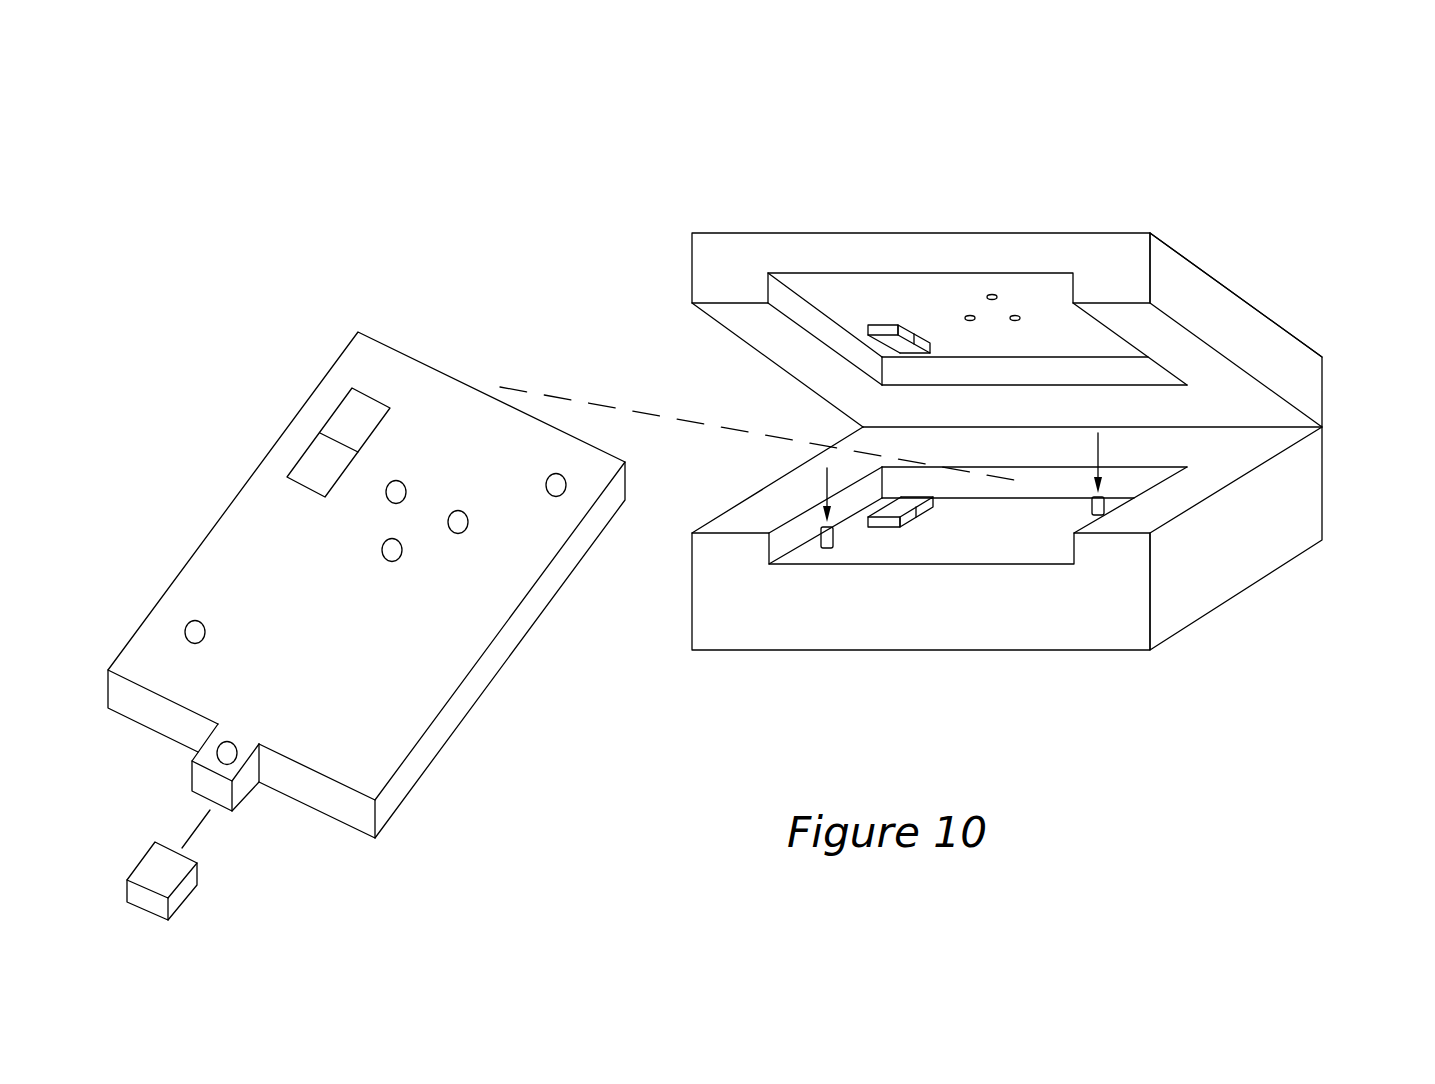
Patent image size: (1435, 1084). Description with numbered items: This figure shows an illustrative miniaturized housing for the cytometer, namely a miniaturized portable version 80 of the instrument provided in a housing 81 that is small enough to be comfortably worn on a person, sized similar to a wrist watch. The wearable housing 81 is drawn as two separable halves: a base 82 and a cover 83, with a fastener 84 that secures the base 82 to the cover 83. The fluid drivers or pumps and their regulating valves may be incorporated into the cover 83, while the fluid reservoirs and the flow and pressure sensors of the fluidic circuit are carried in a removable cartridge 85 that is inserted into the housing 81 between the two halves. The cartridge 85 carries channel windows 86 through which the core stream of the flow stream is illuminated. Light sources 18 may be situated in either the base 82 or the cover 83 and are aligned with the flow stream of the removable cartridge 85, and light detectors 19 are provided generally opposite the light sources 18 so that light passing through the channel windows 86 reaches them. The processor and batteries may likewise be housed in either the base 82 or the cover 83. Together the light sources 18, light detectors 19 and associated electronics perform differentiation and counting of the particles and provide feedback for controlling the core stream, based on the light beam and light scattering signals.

The miniaturized portable version 80 is at (1242, 180).
The housing 81 is at (720, 207).
The base 82 is at (1258, 565).
The cover 83 is at (1275, 343).
The fastener 84 is at (1340, 428).
The removable cartridge 85 is at (230, 525).
The channel windows 86 is at (348, 412).
The light source 18 is at (887, 527).
The light detector 19 is at (885, 342).